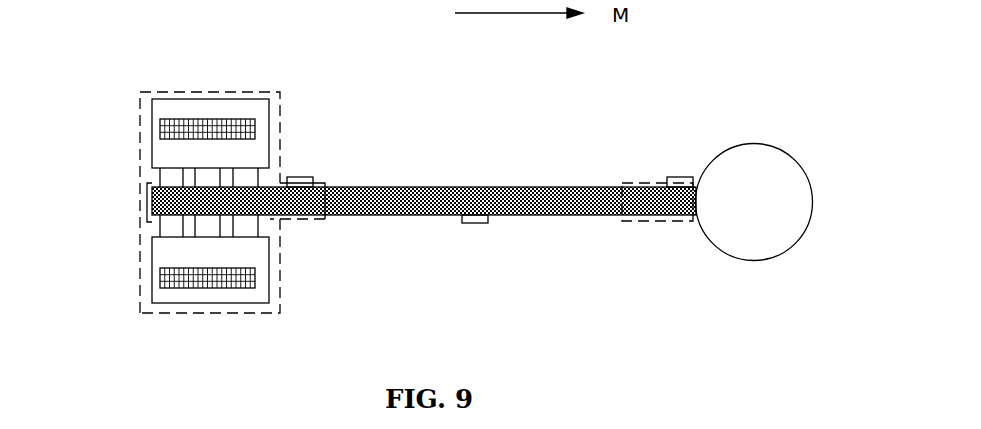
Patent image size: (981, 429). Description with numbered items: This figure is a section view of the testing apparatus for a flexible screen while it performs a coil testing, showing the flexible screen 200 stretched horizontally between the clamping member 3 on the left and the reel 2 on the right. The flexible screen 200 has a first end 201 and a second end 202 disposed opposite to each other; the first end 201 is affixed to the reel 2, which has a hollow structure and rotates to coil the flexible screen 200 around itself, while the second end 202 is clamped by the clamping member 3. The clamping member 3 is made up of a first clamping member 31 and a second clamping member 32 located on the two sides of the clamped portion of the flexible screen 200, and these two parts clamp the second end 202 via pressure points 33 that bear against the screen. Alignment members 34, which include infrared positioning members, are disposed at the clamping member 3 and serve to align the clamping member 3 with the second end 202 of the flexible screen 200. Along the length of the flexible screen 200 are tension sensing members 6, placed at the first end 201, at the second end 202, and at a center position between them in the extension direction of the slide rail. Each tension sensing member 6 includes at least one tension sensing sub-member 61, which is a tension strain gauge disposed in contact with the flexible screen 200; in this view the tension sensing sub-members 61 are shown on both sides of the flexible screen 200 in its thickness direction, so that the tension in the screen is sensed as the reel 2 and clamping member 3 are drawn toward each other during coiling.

The reel 2 is at (774, 148).
The clamping member 3 is at (60, 135).
The tension sensing member 6 is at (490, 256).
The first clamping member 31 is at (140, 141).
The second clamping member 32 is at (140, 266).
The pressure points 33 is at (248, 182).
The alignment members 34 is at (248, 132).
The tension sensing sub-member 61 is at (645, 290).
The flexible screen 200 is at (491, 187).
The first end 201 is at (654, 184).
The second end 202 is at (326, 184).